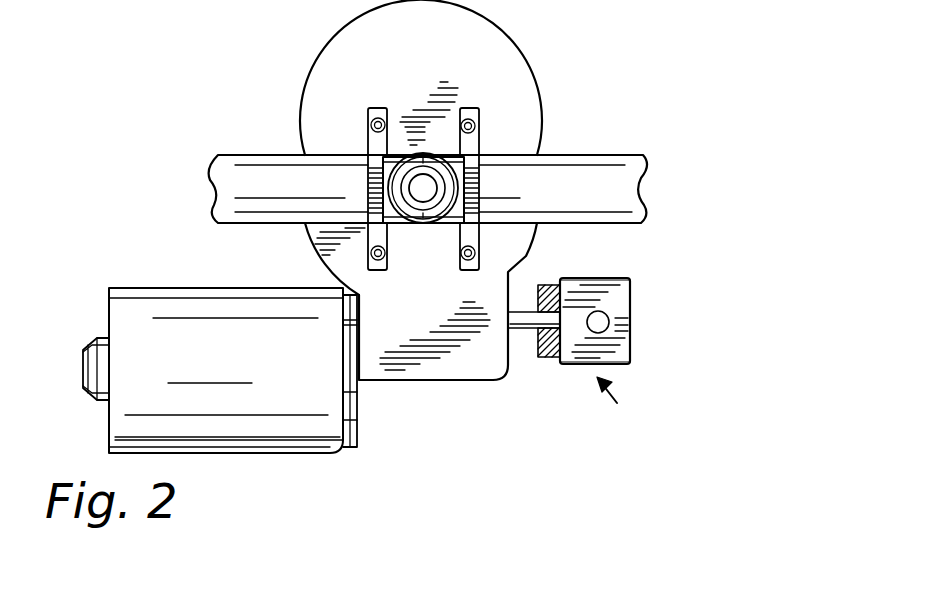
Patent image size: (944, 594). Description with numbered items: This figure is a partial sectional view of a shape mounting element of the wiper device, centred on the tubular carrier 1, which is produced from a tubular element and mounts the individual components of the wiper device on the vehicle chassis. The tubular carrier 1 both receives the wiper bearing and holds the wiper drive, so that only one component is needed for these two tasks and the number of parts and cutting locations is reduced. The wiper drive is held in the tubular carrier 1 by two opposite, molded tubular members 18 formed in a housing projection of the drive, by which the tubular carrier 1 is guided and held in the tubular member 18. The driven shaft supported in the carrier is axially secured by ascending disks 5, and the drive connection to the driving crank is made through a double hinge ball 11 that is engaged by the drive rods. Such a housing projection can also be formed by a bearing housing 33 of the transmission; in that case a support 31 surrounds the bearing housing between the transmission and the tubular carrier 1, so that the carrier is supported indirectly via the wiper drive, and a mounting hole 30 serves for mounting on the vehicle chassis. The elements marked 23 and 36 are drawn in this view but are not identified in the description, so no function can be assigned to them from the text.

The tubular carrier 1 is at (572, 178).
The ascending disks 5 is at (458, 184).
The double hinge ball 11 is at (381, 140).
The molded tubular members 18 is at (622, 411).
The fastening screws 23 is at (379, 118).
The mounting hole 30 is at (510, 300).
The support 31 is at (522, 326).
The bearing housing 33 is at (562, 338).
The clamping piece 36 is at (612, 297).